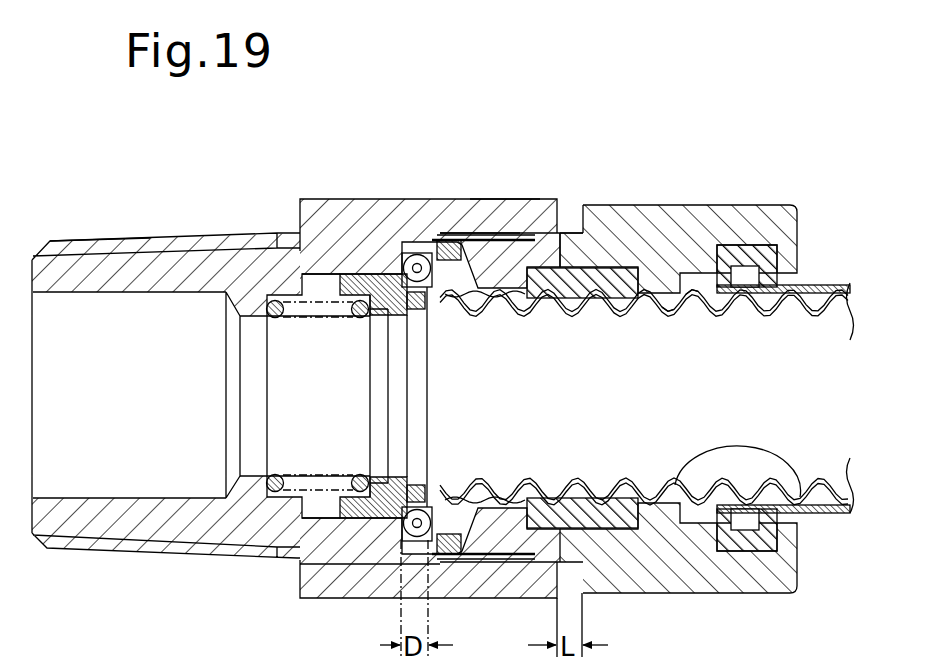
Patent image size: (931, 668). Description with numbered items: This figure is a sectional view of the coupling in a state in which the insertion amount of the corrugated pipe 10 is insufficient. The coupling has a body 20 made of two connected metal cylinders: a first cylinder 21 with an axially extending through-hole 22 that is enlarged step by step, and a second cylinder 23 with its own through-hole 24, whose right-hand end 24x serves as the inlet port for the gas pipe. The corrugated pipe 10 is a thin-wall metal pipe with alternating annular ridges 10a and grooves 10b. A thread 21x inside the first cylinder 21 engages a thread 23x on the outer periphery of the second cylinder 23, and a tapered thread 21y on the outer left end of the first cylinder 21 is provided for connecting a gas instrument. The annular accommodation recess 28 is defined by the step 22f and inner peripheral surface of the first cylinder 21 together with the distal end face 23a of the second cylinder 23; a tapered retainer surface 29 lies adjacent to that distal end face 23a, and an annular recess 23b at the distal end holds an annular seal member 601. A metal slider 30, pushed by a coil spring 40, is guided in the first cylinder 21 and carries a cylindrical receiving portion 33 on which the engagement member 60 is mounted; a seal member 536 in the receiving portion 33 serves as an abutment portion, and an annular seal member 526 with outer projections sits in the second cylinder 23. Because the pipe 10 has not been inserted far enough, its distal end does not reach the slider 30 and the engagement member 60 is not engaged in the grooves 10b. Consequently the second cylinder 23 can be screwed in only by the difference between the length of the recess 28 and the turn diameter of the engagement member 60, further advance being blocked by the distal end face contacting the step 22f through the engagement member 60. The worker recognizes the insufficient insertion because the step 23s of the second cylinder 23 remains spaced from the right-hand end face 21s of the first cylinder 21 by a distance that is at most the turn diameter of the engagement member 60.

The corrugated pipe 10 is at (832, 294).
The ridges 10a is at (703, 287).
The grooves 10b is at (668, 315).
The body 20 is at (505, 195).
The first cylinder 21 is at (310, 193).
The thread 21x is at (478, 233).
The tapered thread 21y is at (203, 234).
The right-hand end face 21s is at (562, 238).
The through-hole 22 is at (150, 300).
The step 22f is at (392, 240).
The second cylinder 23 is at (680, 203).
The distal end face 23a is at (425, 250).
The annular recess 23b is at (458, 300).
The step 23s is at (580, 230).
The thread 23x is at (537, 233).
The through-hole 24 is at (800, 498).
The inlet port 24x is at (800, 288).
The accommodation recess 28 is at (405, 255).
The retainer surface 29 is at (492, 300).
The slider 30 is at (378, 325).
The receiving portion 33 is at (432, 305).
The coil spring 40 is at (272, 475).
The engagement member 60 is at (432, 297).
The seal member 526 is at (600, 268).
The seal member 536 is at (427, 315).
The annular seal member 601 is at (446, 240).